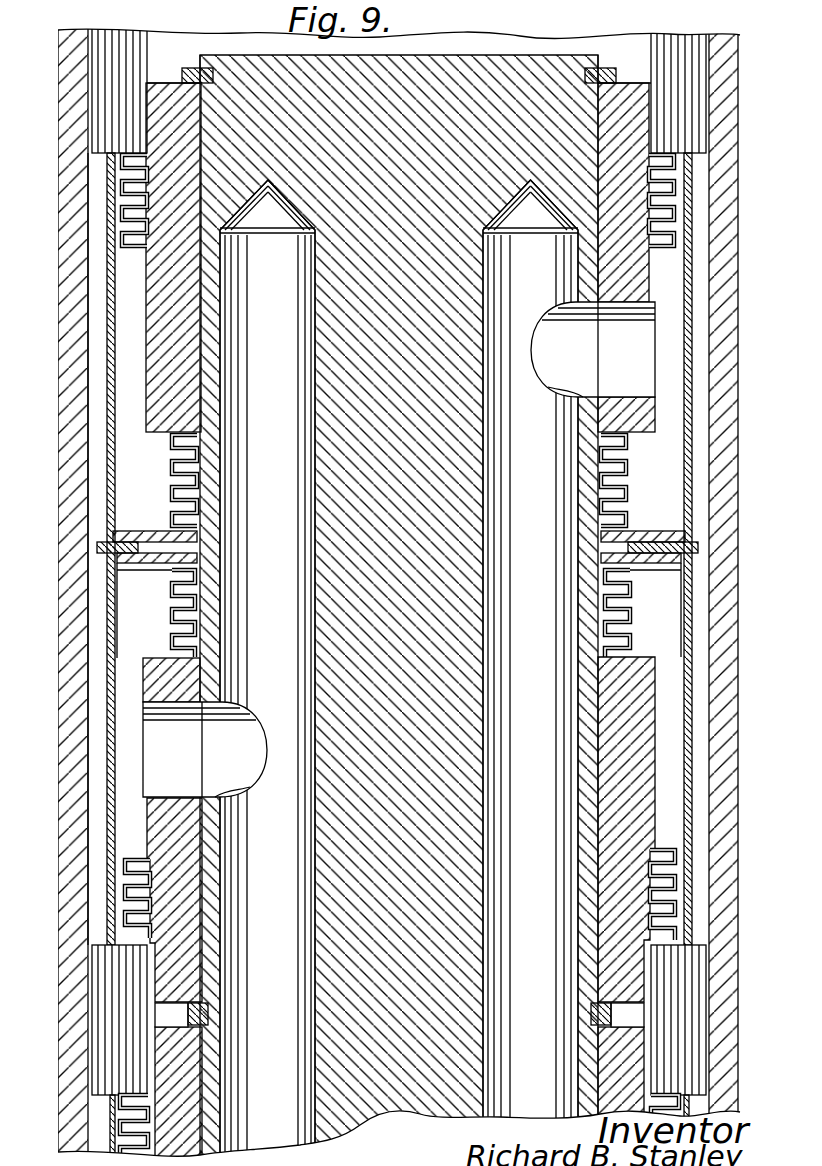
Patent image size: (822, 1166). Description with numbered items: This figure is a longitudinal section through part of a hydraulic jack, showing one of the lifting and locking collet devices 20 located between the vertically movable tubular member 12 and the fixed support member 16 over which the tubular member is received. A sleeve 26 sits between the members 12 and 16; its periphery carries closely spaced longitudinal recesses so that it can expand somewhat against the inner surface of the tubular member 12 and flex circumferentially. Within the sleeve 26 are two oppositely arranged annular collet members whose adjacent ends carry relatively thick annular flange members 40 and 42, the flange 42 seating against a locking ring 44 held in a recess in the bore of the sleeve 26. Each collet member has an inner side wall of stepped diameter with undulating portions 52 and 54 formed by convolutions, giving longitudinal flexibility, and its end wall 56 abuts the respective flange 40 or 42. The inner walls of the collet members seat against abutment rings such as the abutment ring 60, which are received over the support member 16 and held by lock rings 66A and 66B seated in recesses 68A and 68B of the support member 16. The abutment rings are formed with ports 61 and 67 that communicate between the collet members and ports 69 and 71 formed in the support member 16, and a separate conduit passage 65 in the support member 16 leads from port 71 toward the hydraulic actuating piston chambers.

The tubular member 12 is at (58, 437).
The support member 16 is at (131, 310).
The lifting and locking collet device 20 is at (700, 726).
The sleeve 26 is at (97, 510).
The annular flange member 40 is at (147, 563).
The annular flange member 42 is at (197, 538).
The locking ring 44 is at (103, 557).
The undulating portion 52 is at (159, 180).
The undulating portion 54 is at (205, 445).
The end wall 56 is at (145, 527).
The abutment ring 60 is at (190, 880).
The port 61 is at (230, 740).
The conduit passage 65 is at (520, 1090).
The lock ring 66A is at (208, 1012).
The locking ring 66B is at (213, 76).
The port 67 is at (568, 330).
The recess 68A is at (205, 1028).
The recess 68B is at (207, 88).
The port 69 is at (215, 793).
The port 71 is at (580, 395).